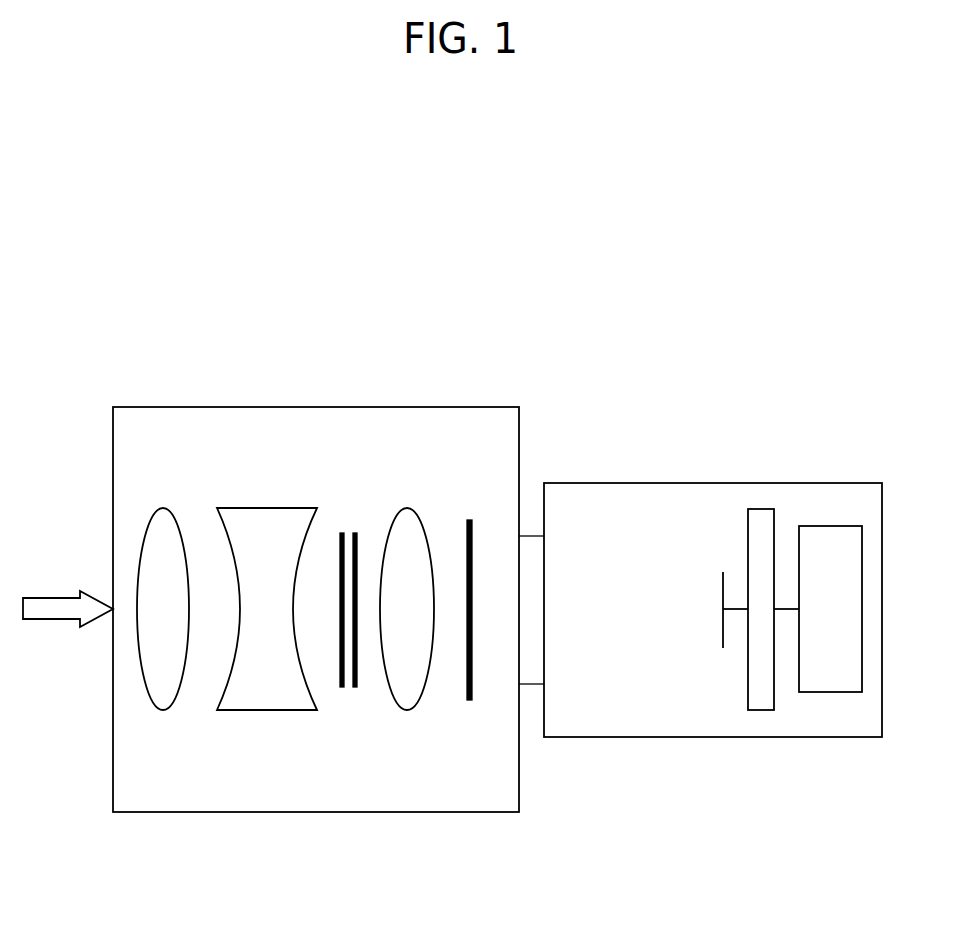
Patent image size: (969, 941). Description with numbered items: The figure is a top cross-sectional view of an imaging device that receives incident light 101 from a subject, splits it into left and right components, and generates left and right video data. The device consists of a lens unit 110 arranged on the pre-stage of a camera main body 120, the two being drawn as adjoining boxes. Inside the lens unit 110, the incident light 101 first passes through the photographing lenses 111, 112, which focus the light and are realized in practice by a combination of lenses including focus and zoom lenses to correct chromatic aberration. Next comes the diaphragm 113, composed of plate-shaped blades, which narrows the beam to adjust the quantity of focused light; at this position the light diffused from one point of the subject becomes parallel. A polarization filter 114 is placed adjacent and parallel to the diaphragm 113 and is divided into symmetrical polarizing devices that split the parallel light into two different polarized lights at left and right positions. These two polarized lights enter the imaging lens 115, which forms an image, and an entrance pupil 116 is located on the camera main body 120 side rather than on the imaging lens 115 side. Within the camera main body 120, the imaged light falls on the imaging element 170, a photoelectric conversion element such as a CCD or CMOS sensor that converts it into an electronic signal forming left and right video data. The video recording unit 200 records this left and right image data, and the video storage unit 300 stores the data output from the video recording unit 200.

The incident light 101 is at (55, 597).
The lens unit 110 is at (236, 407).
The photographing lens 111 is at (163, 508).
The photographing lens 112 is at (264, 508).
The diaphragm 113 is at (353, 519).
The polarization filter 114 is at (350, 704).
The imaging lens 115 is at (405, 507).
The entrance pupil 116 is at (465, 716).
The camera main body 120 is at (628, 483).
The imaging element 170 is at (706, 646).
The video recording unit 200 is at (761, 710).
The video storage unit 300 is at (831, 692).